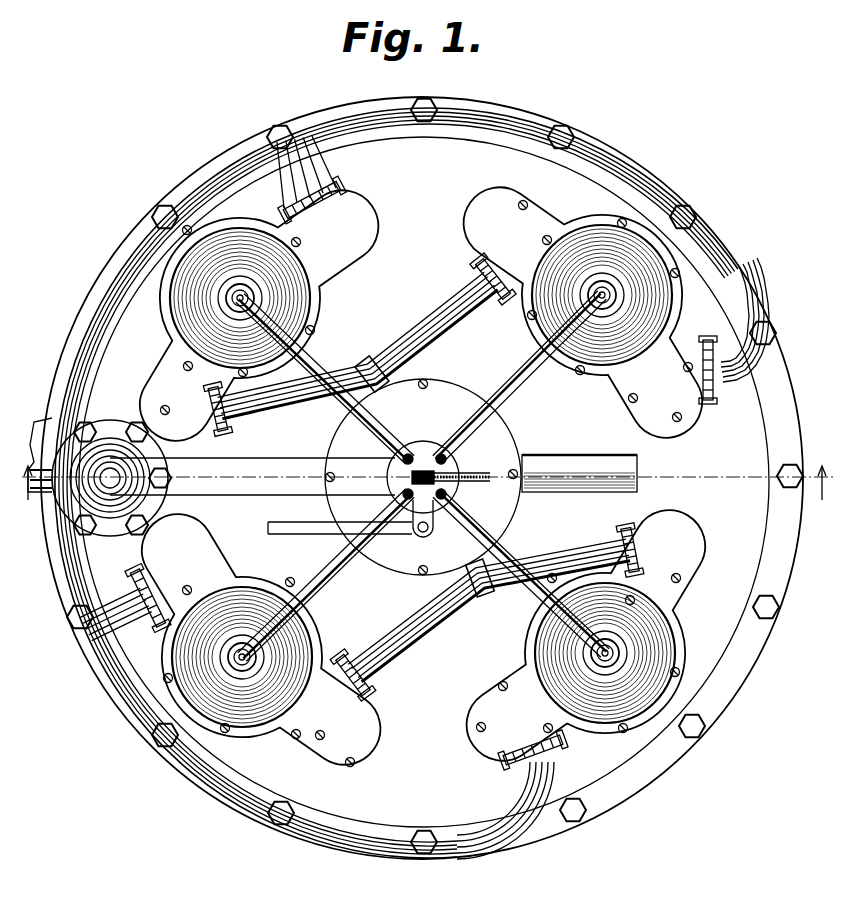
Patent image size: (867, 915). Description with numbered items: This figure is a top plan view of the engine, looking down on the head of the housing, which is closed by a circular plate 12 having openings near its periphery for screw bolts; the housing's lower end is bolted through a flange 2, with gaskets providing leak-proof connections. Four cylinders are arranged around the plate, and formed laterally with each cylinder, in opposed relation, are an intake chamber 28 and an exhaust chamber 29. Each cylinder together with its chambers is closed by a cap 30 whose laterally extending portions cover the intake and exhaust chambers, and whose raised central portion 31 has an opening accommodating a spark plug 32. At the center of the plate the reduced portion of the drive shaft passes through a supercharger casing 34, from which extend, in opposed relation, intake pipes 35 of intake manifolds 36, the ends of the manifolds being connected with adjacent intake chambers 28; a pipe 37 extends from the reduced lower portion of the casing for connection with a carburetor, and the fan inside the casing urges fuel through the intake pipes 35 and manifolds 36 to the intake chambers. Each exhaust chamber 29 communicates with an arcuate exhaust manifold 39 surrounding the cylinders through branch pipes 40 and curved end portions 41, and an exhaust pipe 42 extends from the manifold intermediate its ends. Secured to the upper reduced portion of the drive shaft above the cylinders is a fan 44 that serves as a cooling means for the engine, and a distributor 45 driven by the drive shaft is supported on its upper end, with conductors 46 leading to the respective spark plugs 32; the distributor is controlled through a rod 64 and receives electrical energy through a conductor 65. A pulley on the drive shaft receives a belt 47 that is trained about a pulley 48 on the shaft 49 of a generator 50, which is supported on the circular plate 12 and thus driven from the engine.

The flange 2 is at (428, 499).
The circular plate 12 is at (380, 800).
The intake chamber 28 is at (470, 275).
The exhaust chamber 29 is at (350, 225).
The cap 30 is at (492, 220).
The raised central portion 31 is at (232, 268).
The spark plug 32 is at (226, 302).
The supercharger casing 34 is at (510, 455).
The intake pipe 35 is at (388, 378).
The intake manifold 36 is at (393, 335).
The pipe 37 is at (605, 460).
The exhaust manifold 39 is at (600, 150).
The branch pipe 40 is at (318, 178).
The curved end portion 41 is at (735, 370).
The exhaust pipe 42 is at (42, 420).
The fan 44 is at (330, 545).
The distributor 45 is at (400, 458).
The conductor 46 is at (412, 452).
The belt 47 is at (296, 458).
The pulley 48 is at (150, 488).
The shaft 49 is at (110, 468).
The generator 50 is at (120, 520).
The rod 64 is at (320, 534).
The conductor 65 is at (470, 482).